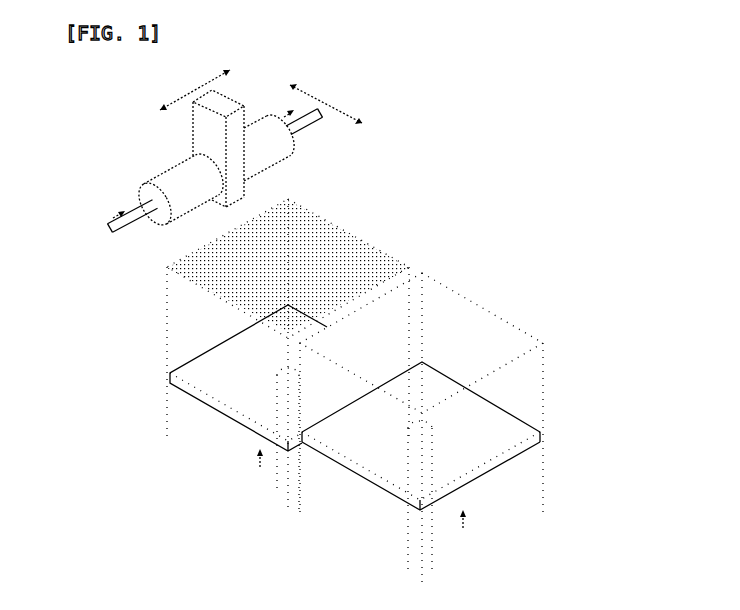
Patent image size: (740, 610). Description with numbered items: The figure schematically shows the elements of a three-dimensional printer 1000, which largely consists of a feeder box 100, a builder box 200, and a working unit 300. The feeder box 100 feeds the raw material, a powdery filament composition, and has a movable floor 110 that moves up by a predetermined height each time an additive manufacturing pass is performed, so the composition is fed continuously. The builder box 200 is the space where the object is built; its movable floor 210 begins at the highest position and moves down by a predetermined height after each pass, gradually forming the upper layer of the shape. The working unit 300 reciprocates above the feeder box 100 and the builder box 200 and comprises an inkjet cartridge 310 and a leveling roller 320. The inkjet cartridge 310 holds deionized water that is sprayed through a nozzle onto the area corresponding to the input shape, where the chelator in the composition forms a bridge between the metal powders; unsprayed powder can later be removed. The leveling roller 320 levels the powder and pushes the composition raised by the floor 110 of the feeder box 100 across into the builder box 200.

The 3D printer 1000 is at (512, 100).
The feeder box 100 is at (363, 229).
The movable floor 110 is at (237, 426).
The builder box 200 is at (483, 305).
The movable floor 210 is at (378, 484).
The working unit 300 is at (105, 129).
The inkjet cartridge 310 is at (203, 126).
The leveling roller 320 is at (177, 175).